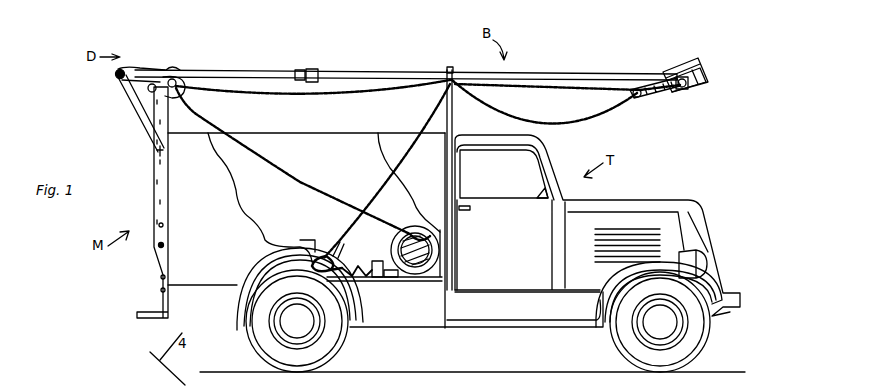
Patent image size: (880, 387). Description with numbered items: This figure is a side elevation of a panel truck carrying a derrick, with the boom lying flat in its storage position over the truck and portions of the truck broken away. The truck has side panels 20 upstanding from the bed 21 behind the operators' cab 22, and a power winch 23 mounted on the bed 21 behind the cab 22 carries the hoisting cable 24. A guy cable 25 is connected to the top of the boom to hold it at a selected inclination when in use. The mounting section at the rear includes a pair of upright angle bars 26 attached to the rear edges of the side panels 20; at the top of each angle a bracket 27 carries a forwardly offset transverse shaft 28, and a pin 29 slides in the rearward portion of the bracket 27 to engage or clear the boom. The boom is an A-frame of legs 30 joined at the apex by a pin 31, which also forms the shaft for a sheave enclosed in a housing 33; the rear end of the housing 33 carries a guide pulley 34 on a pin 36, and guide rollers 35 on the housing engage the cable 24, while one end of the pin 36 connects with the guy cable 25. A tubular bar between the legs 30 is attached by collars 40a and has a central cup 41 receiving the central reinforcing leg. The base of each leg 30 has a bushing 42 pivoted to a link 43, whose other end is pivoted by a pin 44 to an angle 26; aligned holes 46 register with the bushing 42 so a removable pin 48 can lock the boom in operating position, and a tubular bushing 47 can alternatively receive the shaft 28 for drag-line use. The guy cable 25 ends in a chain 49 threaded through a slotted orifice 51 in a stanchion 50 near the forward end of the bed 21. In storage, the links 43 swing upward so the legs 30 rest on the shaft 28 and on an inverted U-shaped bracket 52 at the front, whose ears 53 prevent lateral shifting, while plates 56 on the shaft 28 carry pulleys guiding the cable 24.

The side panels 20 is at (218, 200).
The bed 21 is at (398, 282).
The operators' cab 22 is at (515, 243).
The power winch 23 is at (430, 256).
The hoisting cable 24 is at (328, 92).
The guy cable 25 is at (566, 114).
The upright angle bars 26 is at (154, 173).
The bracket 27 is at (186, 90).
The transverse shaft 28 is at (176, 79).
The pin 29 is at (148, 91).
The legs 30 is at (415, 72).
The pin 31 is at (688, 92).
The housing 33 is at (700, 77).
The guide pulley 34 is at (634, 100).
The guide rollers 35 is at (682, 62).
The pin 36 is at (648, 94).
The collar 40a is at (300, 68).
The cup 41 is at (318, 68).
The bushing 42 is at (116, 78).
The link 43 is at (144, 128).
The pin 44 is at (168, 151).
The aligned holes 46 is at (166, 226).
The tubular bushing 47 is at (166, 247).
The removable pin 48 is at (163, 300).
The chain 49 is at (342, 239).
The stanchion 50 is at (375, 260).
The slotted orifice 51 is at (374, 282).
The inverted U-shaped bracket 52 is at (454, 118).
The ears 53 is at (462, 68).
The plates 56 is at (178, 70).